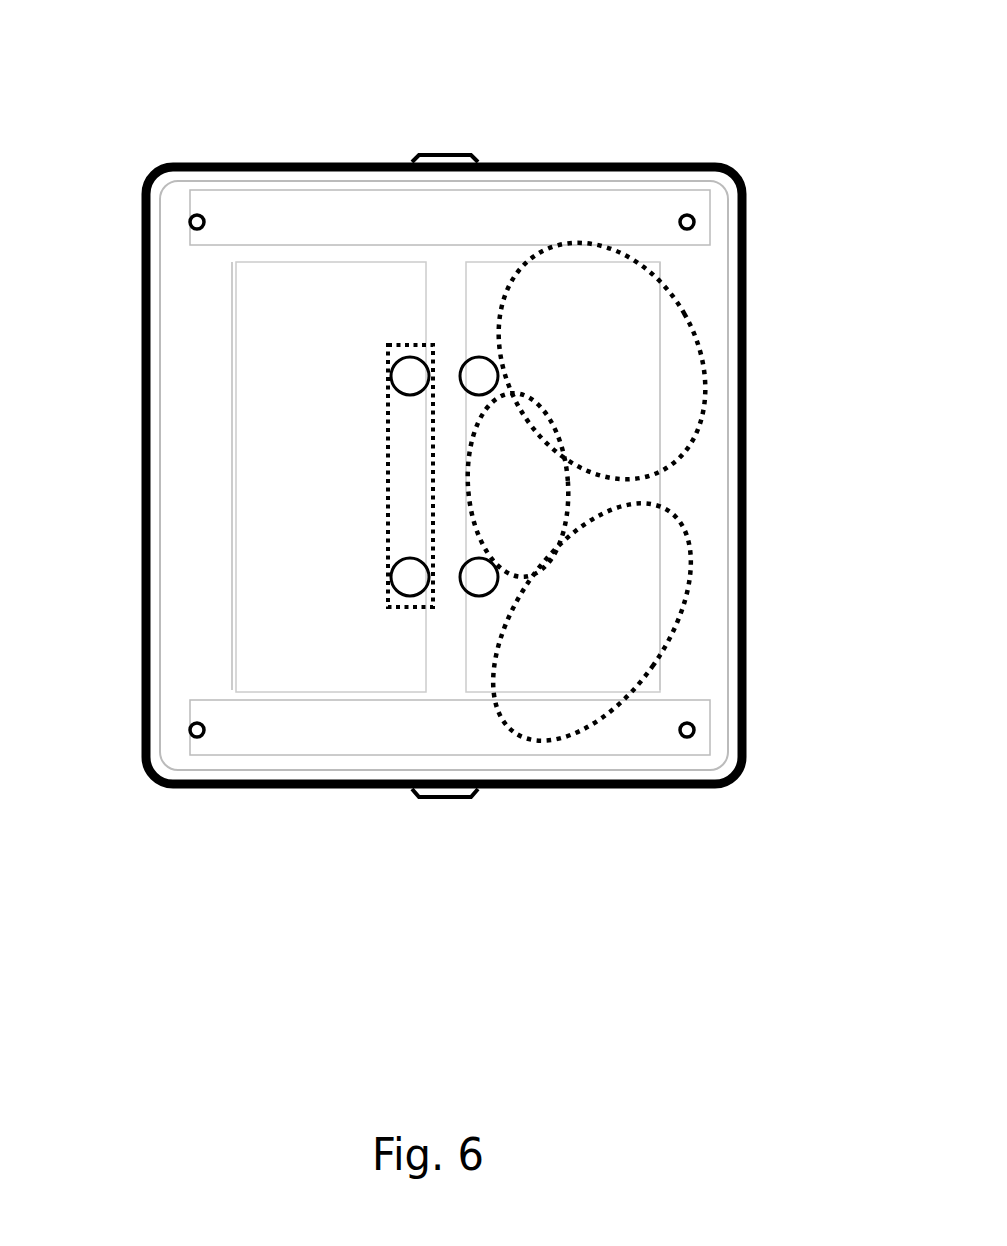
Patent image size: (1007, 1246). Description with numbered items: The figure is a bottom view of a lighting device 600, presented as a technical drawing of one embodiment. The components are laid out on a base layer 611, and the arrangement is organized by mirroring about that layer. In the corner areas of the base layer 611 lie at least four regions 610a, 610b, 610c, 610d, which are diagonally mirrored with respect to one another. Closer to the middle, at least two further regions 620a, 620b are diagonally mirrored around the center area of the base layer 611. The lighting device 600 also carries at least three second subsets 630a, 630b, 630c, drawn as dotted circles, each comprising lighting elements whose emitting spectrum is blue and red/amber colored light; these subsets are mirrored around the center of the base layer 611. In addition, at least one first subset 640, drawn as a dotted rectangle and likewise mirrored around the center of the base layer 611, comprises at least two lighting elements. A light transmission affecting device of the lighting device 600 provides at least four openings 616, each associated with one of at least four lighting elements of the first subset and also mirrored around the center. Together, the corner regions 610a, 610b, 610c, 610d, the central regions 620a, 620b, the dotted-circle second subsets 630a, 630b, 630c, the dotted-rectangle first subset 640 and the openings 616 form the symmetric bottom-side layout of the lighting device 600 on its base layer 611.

The lighting device 600 is at (470, 1035).
The base layer 611 is at (318, 162).
The region 610a is at (290, 203).
The region 610b is at (192, 487).
The region 610c is at (287, 757).
The region 610d is at (708, 488).
The region 620a is at (318, 293).
The region 620b is at (489, 297).
The opening 616 is at (390, 378).
The first subset 640 is at (388, 500).
The second subset 630a is at (693, 338).
The second subset 630b is at (583, 717).
The second subset 630c is at (615, 485).